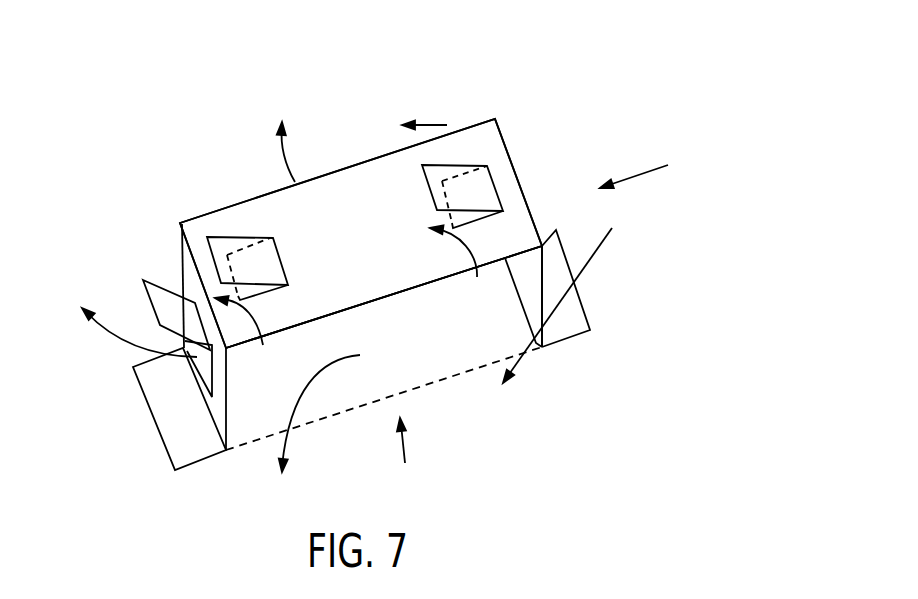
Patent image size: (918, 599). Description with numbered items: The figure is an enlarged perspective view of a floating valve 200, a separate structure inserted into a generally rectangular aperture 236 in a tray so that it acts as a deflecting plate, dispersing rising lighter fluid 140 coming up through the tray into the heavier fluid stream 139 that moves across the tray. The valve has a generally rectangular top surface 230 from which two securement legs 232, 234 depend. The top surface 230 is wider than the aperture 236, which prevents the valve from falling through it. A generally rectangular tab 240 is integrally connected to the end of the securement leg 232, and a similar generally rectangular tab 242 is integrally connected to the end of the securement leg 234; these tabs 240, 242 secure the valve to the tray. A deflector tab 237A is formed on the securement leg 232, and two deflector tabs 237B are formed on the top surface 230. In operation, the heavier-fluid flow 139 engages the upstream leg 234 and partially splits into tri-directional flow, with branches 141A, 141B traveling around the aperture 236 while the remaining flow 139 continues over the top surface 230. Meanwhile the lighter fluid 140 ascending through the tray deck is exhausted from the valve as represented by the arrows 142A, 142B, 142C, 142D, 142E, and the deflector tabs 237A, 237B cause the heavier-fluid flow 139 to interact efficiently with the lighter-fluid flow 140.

The floating valve 200 is at (437, 88).
The generally rectangular top surface 230 is at (355, 240).
The aperture 236 is at (405, 338).
The securement leg 234 is at (532, 266).
The generally rectangular tab 242 is at (574, 338).
The tri-directional flow 141B is at (594, 252).
The heavier fluid stream 139 is at (641, 171).
The tri-directional flow 141A is at (447, 125).
The exhausted lighter fluid arrow 142C is at (287, 157).
The deflector tab 237B is at (222, 243).
The deflector tab 237A is at (158, 285).
The securement leg 232 is at (231, 447).
The generally rectangular tab 240 is at (192, 418).
The exhausted lighter fluid arrow 142B is at (118, 340).
The exhausted lighter fluid arrow 142D is at (249, 337).
The exhausted lighter fluid arrow 142E is at (462, 267).
The exhausted lighter fluid arrow 142A is at (290, 418).
The lighter fluid 140 is at (404, 455).